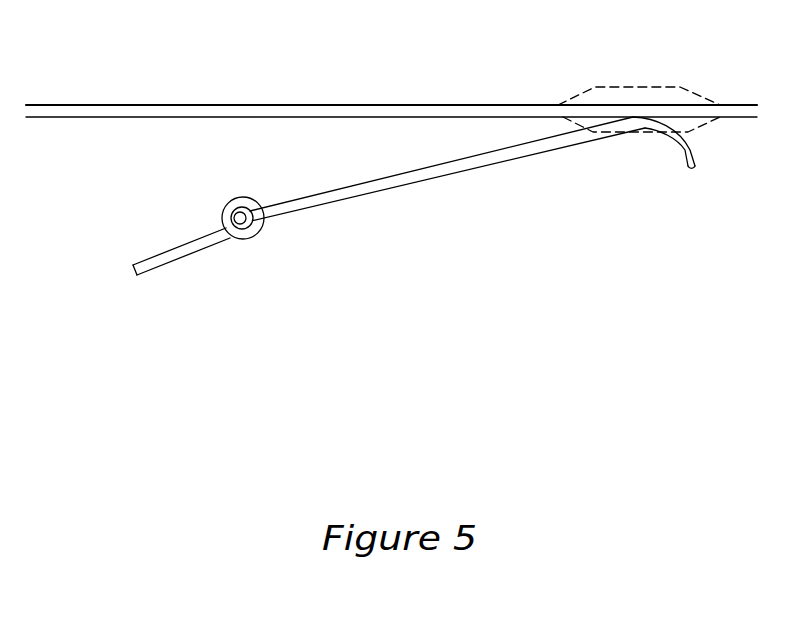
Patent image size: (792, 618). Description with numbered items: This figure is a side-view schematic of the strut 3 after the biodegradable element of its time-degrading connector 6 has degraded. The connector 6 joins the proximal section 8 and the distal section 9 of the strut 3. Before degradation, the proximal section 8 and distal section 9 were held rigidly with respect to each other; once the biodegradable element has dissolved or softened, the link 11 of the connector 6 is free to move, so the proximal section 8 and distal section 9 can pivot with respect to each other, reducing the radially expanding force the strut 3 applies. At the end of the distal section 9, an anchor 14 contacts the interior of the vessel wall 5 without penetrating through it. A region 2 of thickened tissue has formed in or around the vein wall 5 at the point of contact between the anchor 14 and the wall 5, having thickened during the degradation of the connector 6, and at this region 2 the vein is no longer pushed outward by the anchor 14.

The region of thickened tissue 2 is at (590, 79).
The strut 3 is at (508, 185).
The vessel wall 5 is at (268, 108).
The time-degrading connector 6 is at (189, 183).
The proximal section 8 is at (180, 249).
The distal section 9 is at (332, 200).
The link 11 is at (278, 237).
The anchor 14 is at (699, 153).